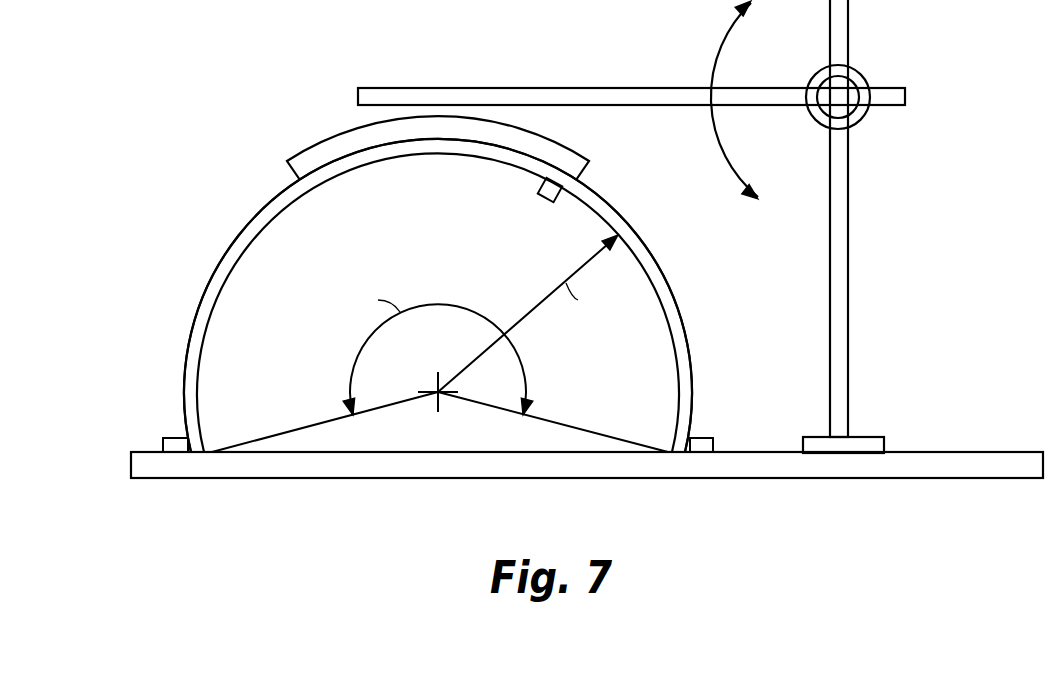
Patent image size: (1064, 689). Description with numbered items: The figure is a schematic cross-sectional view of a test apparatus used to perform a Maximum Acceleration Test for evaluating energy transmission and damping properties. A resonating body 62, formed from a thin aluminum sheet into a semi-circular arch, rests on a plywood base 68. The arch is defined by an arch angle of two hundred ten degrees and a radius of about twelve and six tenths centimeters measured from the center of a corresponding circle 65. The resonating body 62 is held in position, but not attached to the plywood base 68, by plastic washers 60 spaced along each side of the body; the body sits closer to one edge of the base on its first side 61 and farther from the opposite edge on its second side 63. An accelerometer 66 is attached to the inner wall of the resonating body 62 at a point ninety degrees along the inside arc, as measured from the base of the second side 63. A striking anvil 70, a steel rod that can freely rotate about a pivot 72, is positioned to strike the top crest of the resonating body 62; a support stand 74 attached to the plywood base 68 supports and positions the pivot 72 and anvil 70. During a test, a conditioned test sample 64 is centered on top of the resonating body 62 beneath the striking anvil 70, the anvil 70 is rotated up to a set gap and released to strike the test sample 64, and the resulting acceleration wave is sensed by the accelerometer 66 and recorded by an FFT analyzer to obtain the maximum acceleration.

The plastic washers 60 is at (175, 440).
The first side 61 is at (170, 305).
The resonating body 62 is at (263, 213).
The second side 63 is at (700, 368).
The test sample 64 is at (329, 147).
The center of a corresponding circle 65 is at (435, 396).
The accelerometer 66 is at (547, 199).
The plywood base 68 is at (975, 460).
The striking anvil 70 is at (589, 92).
The pivot 72 is at (857, 80).
The support stand 74 is at (838, 230).